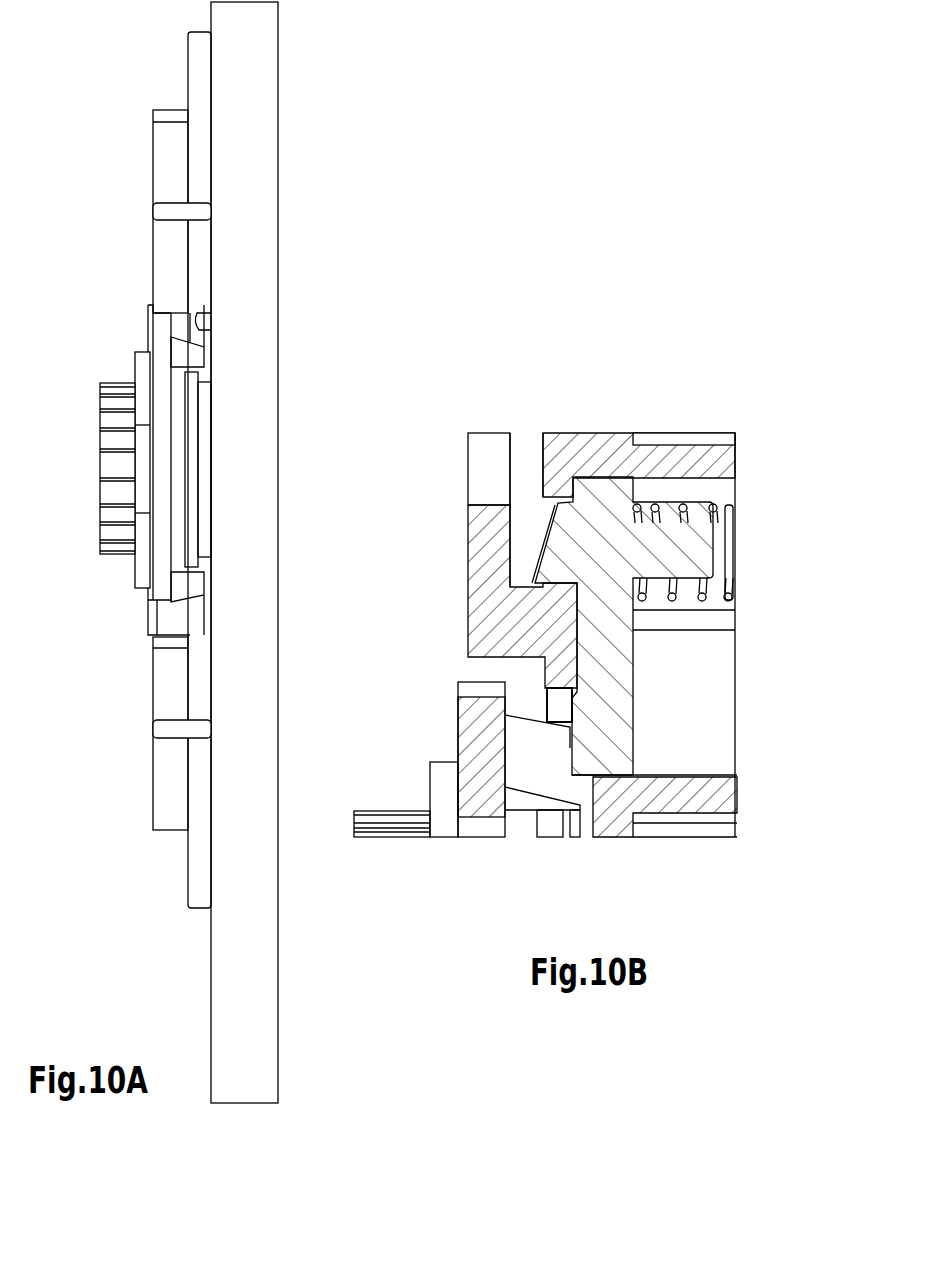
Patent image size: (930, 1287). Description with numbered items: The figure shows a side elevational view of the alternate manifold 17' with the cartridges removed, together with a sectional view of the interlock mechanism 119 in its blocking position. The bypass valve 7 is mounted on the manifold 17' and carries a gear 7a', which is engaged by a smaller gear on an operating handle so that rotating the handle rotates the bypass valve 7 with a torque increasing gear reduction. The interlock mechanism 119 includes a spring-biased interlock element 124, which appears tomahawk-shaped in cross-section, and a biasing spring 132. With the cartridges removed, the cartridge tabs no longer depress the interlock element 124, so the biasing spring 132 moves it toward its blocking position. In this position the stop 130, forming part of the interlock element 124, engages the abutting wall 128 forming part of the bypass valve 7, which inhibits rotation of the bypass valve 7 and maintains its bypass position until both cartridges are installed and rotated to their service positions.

In FIG. 10A, the manifold 17' is at (294, 552).
In FIG. 10A, the bypass valve 7 is at (85, 524).
In FIG. 10A, the gear 7a' is at (95, 467).
In FIG. 10A, the abutting wall 128 is at (177, 348).
In FIG. 10B, the abutting wall 128 is at (532, 775).
In FIG. 10A, the stop 130 is at (213, 313).
In FIG. 10B, the stop 130 is at (570, 748).
In FIG. 10B, the interlock mechanism 119 is at (778, 412).
In FIG. 10B, the interlock element 124 is at (615, 683).
In FIG. 10B, the biasing spring 132 is at (715, 507).